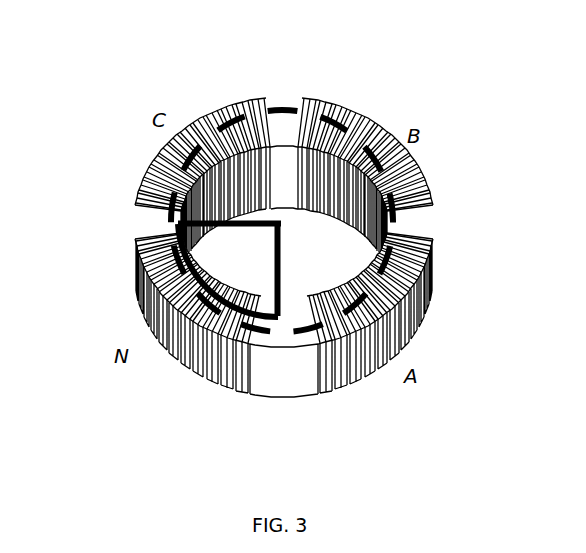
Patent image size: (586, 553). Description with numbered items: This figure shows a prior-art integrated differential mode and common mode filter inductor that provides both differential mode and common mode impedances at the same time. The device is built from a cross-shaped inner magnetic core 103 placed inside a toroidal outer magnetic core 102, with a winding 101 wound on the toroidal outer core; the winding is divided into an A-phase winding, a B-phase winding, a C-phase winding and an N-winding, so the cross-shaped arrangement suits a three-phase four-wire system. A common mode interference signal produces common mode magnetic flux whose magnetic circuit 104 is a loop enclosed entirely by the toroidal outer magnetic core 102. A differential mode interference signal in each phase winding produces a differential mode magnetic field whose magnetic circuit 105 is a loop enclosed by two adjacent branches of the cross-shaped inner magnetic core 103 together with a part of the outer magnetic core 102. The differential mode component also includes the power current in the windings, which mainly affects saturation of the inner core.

The winding 101 is at (403, 163).
The outer magnetic core 102 is at (145, 212).
The inner magnetic core 103 is at (282, 172).
The magnetic circuit of common mode magnetic flux 104 is at (197, 297).
The magnetic circuit of differential mode magnetic field 105 is at (180, 240).